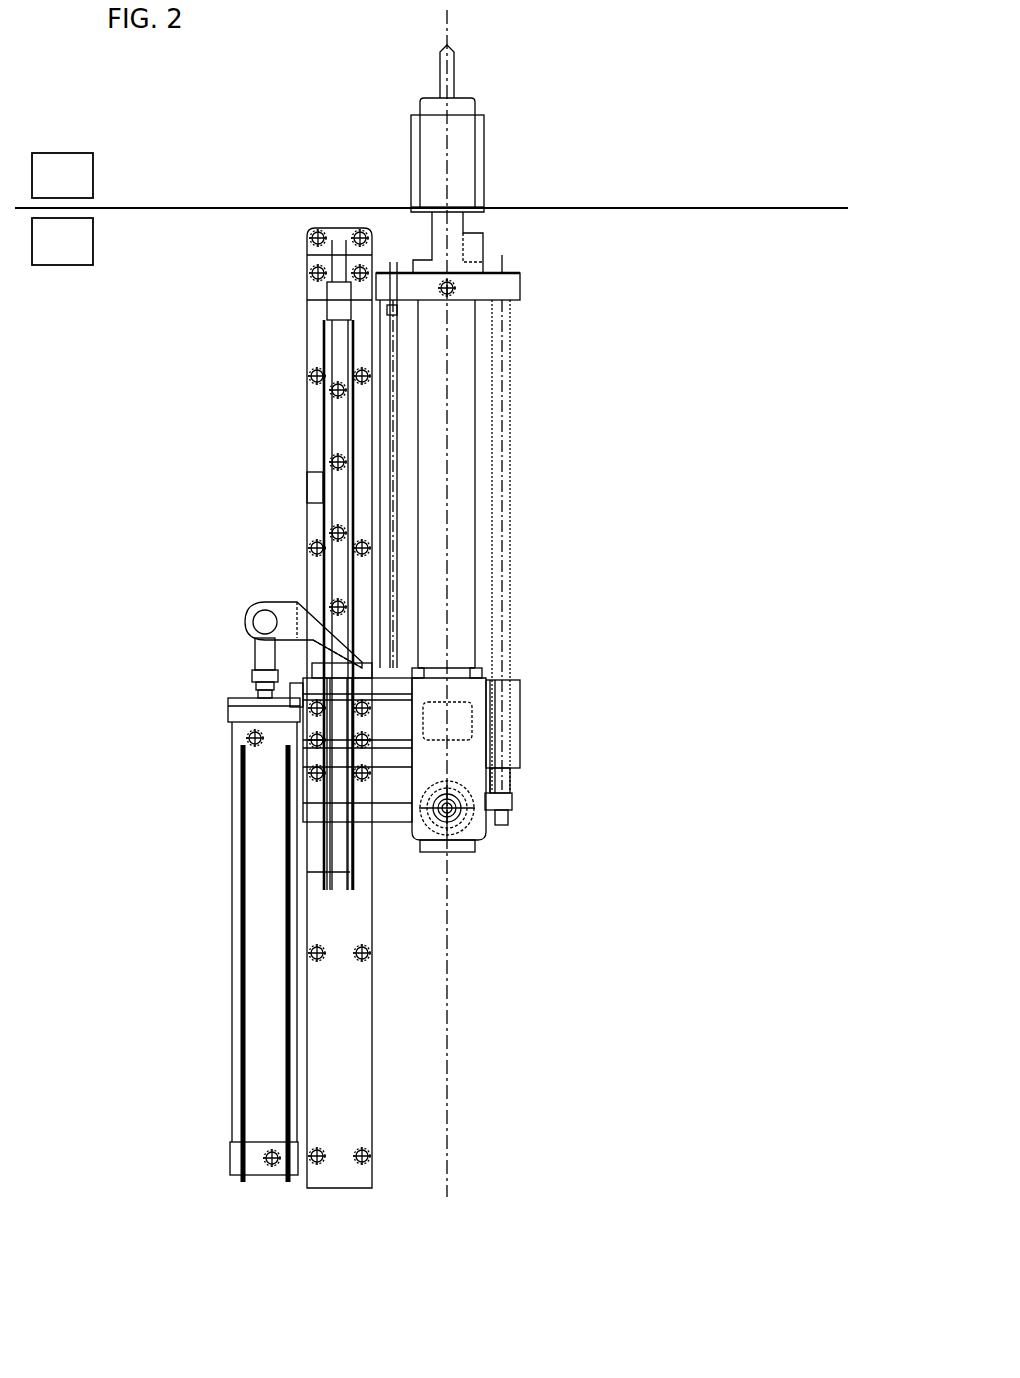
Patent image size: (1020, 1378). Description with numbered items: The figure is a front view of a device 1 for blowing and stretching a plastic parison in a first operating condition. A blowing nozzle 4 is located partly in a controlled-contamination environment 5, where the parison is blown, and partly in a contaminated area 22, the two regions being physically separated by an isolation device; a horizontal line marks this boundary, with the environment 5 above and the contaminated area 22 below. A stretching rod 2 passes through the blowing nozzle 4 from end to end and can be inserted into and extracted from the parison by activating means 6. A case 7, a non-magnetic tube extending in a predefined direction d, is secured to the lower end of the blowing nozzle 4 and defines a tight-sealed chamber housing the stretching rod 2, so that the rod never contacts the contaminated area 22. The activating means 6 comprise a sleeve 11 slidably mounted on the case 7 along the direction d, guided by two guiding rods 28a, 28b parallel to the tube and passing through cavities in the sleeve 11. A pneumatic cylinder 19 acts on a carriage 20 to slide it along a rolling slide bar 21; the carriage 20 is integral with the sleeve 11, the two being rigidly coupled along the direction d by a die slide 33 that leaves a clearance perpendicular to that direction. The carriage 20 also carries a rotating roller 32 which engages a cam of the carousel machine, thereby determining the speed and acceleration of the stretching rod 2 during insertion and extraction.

The device 1 is at (690, 166).
The stretching rod 2 is at (451, 72).
The blowing nozzle 4 is at (490, 164).
The controlled-contamination environment 5 is at (62, 175).
The contaminated area 22 is at (62, 241).
The case 7 is at (478, 533).
The guiding rod 28a is at (388, 440).
The guiding rod 28b is at (507, 440).
The slide bar 21 is at (308, 518).
The carriage 20 is at (387, 778).
The sleeve 11 is at (526, 708).
The die slide 33 is at (452, 720).
The roller 32 is at (465, 827).
The activating means 6 is at (192, 794).
The pneumatic cylinder 19 is at (233, 936).
The predefined direction d is at (447, 932).